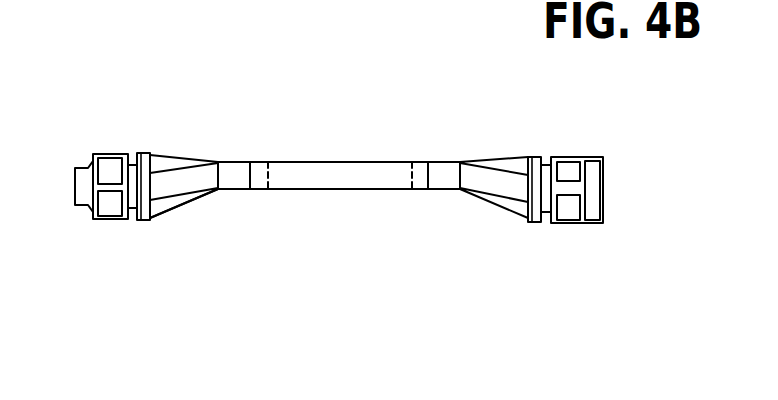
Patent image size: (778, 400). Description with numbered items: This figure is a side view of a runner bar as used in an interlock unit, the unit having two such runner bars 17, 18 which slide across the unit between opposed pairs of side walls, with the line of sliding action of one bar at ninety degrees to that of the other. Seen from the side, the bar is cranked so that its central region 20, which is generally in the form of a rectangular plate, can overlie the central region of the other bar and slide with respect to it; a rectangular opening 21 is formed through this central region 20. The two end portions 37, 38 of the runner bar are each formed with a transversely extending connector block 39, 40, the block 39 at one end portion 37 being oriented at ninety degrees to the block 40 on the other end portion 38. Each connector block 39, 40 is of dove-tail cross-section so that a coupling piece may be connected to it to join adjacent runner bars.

The runner bar 17 is at (155, 258).
The runner bar 18 is at (191, 228).
The central region 20 is at (262, 160).
The rectangular opening 21 is at (410, 176).
The end portion 37 is at (117, 145).
The end portion 38 is at (574, 157).
The connector block 39 is at (74, 180).
The connector block 40 is at (600, 190).